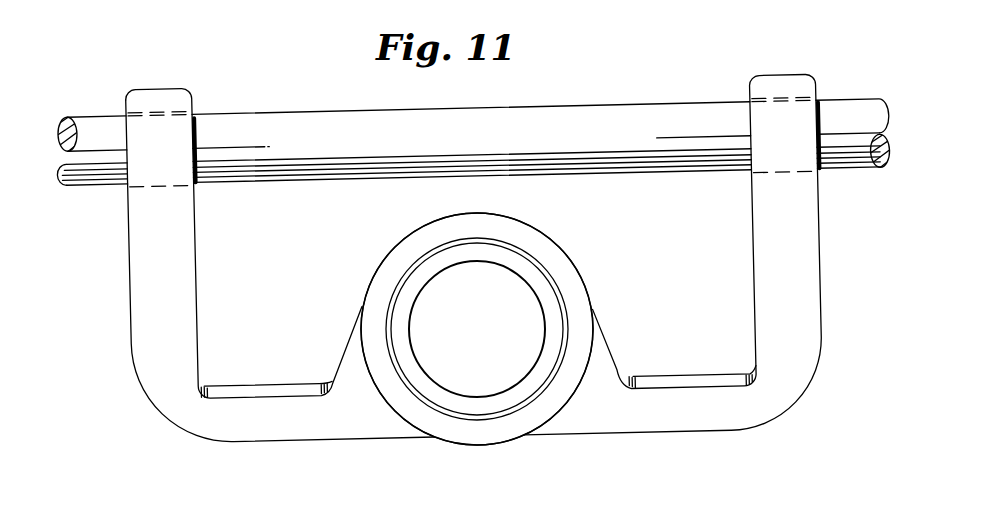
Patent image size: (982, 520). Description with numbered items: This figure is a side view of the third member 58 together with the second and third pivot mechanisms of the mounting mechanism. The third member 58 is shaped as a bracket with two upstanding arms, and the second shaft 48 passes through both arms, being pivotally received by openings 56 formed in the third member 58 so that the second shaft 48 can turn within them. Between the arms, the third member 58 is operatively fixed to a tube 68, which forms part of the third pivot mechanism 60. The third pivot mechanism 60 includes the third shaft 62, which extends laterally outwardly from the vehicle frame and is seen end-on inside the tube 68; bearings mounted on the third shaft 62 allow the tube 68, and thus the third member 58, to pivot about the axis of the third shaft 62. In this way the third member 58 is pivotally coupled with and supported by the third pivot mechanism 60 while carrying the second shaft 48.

The second shaft 48 is at (853, 101).
The openings 56 is at (793, 167).
The third member 58 is at (822, 249).
The third pivot mechanism 60 is at (507, 438).
The third shaft 62 is at (527, 258).
The tube 68 is at (575, 262).